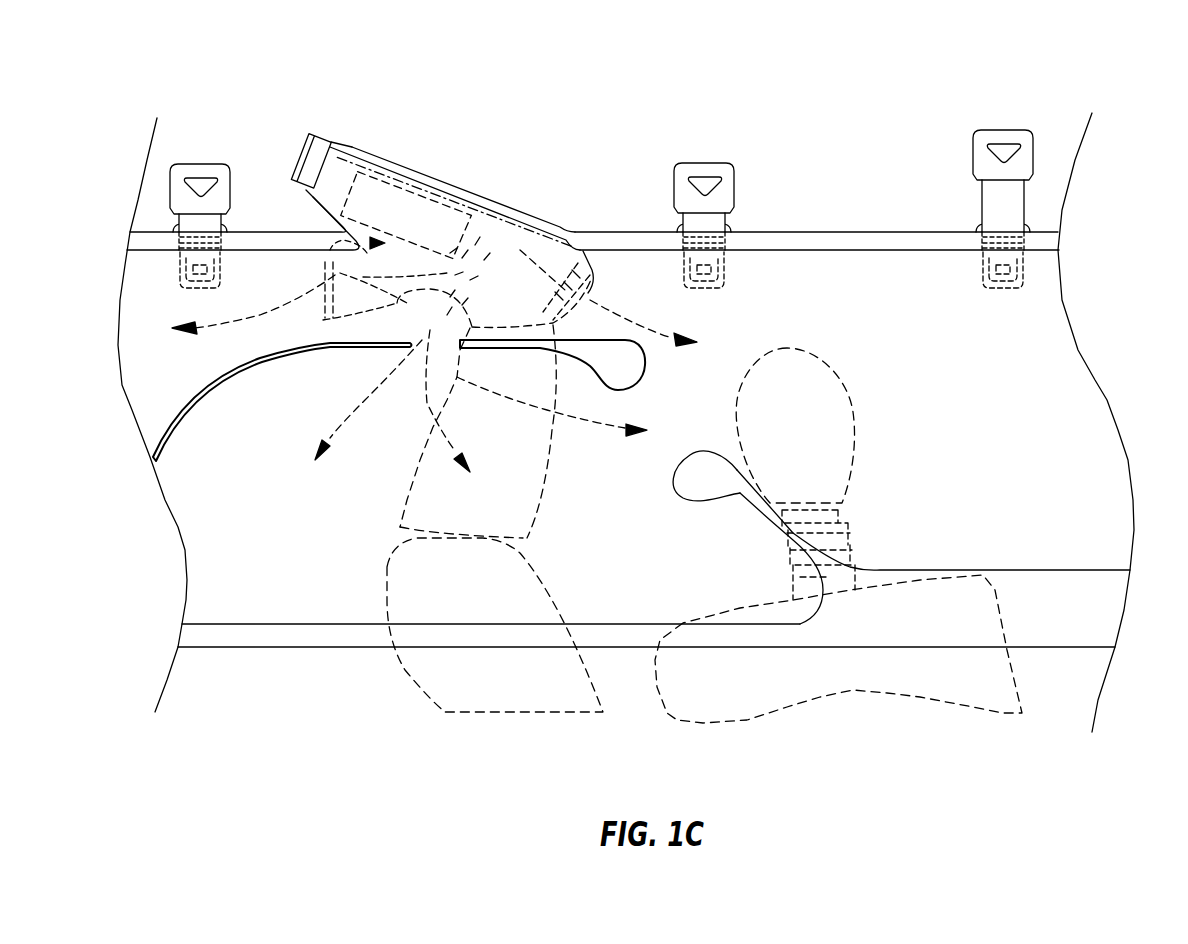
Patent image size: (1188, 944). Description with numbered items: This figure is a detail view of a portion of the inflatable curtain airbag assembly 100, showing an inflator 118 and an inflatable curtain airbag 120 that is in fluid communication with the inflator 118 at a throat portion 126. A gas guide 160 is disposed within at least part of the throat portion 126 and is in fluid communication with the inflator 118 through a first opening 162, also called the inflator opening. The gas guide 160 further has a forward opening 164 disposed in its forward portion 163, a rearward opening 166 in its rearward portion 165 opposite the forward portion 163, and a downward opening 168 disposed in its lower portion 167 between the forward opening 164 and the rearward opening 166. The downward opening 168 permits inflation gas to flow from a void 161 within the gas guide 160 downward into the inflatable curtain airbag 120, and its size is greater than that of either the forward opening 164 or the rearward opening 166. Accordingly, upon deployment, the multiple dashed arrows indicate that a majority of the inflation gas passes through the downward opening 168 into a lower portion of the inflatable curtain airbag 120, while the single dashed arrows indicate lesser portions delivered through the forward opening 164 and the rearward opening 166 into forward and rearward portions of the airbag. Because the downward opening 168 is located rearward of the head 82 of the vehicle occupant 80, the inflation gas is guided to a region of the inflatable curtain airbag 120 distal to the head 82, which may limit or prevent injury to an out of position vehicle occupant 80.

The inflatable curtain airbag assembly 100 is at (810, 120).
The inflatable curtain airbag 120 is at (1037, 337).
The inflator 118 is at (409, 203).
The throat portion 126 is at (447, 184).
The gas guide 160 is at (545, 232).
The void 161 is at (337, 287).
The first opening 162 is at (331, 148).
The forward portion 163 is at (592, 268).
The forward opening 164 is at (603, 297).
The rearward portion 165 is at (331, 330).
The rearward opening 166 is at (323, 300).
The lower portion 167 is at (482, 317).
The downward opening 168 is at (368, 243).
The head 82 is at (811, 426).
The vehicle occupant 80 is at (963, 676).